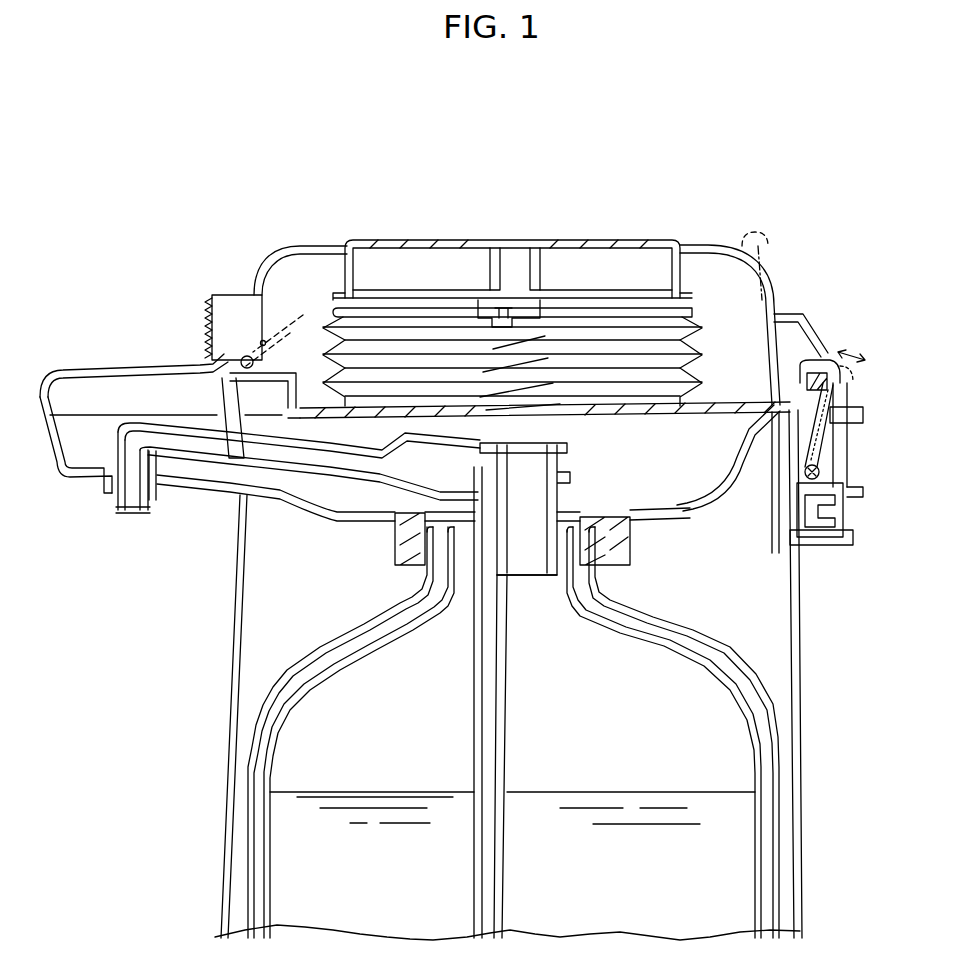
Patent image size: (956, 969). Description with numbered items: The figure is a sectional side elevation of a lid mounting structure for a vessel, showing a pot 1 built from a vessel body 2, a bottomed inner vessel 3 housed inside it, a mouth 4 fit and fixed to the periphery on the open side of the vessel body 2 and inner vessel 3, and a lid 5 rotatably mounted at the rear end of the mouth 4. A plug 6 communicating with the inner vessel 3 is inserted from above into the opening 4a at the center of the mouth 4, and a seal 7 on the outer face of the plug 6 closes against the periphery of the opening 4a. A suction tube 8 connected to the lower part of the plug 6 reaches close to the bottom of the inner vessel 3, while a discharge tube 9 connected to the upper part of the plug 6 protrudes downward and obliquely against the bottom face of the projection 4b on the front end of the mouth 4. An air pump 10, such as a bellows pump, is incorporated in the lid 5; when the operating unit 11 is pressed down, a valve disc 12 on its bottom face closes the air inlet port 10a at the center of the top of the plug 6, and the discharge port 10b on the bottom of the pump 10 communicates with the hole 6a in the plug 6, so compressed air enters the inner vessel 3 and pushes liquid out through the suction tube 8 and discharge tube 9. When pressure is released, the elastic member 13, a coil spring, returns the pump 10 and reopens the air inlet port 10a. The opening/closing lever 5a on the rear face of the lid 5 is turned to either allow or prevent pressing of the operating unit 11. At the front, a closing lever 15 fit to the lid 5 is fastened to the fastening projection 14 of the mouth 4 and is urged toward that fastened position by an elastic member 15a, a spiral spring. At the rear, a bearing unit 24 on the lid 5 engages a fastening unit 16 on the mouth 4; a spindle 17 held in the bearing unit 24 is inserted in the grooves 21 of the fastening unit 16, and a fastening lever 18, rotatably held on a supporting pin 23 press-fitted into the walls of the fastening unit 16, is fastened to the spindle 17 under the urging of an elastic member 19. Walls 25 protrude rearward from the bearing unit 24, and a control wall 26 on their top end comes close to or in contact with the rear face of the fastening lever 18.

The pot 1 is at (634, 185).
The vessel body 2 is at (240, 604).
The inner vessel 3 is at (683, 623).
The mouth 4 is at (200, 488).
The opening 4a is at (548, 520).
The projection 4b is at (60, 472).
The lid 5 is at (778, 280).
The opening/closing lever 5a is at (760, 236).
The plug 6 is at (562, 493).
The hole 6a is at (556, 465).
The seal 7 is at (584, 512).
The suction tube 8 is at (504, 708).
The discharge tube 9 is at (113, 497).
The air pump 10 is at (393, 250).
The air inlet port 10a is at (485, 322).
The discharge port 10b is at (515, 435).
The operating unit 11 is at (473, 240).
The valve disc 12 is at (508, 318).
The elastic member 13 is at (533, 363).
The fastening projection 14 is at (240, 420).
The closing lever 15 is at (225, 306).
The elastic member 15a is at (281, 324).
The fastening unit 16 is at (846, 408).
The spindle 17 is at (834, 374).
The fastening lever 18 is at (828, 430).
The elastic member 19 is at (805, 525).
The grooves 21 is at (822, 360).
The supporting pin 23 is at (820, 478).
The bearing unit 24 is at (817, 288).
The walls 25 is at (790, 372).
The control wall 26 is at (806, 325).